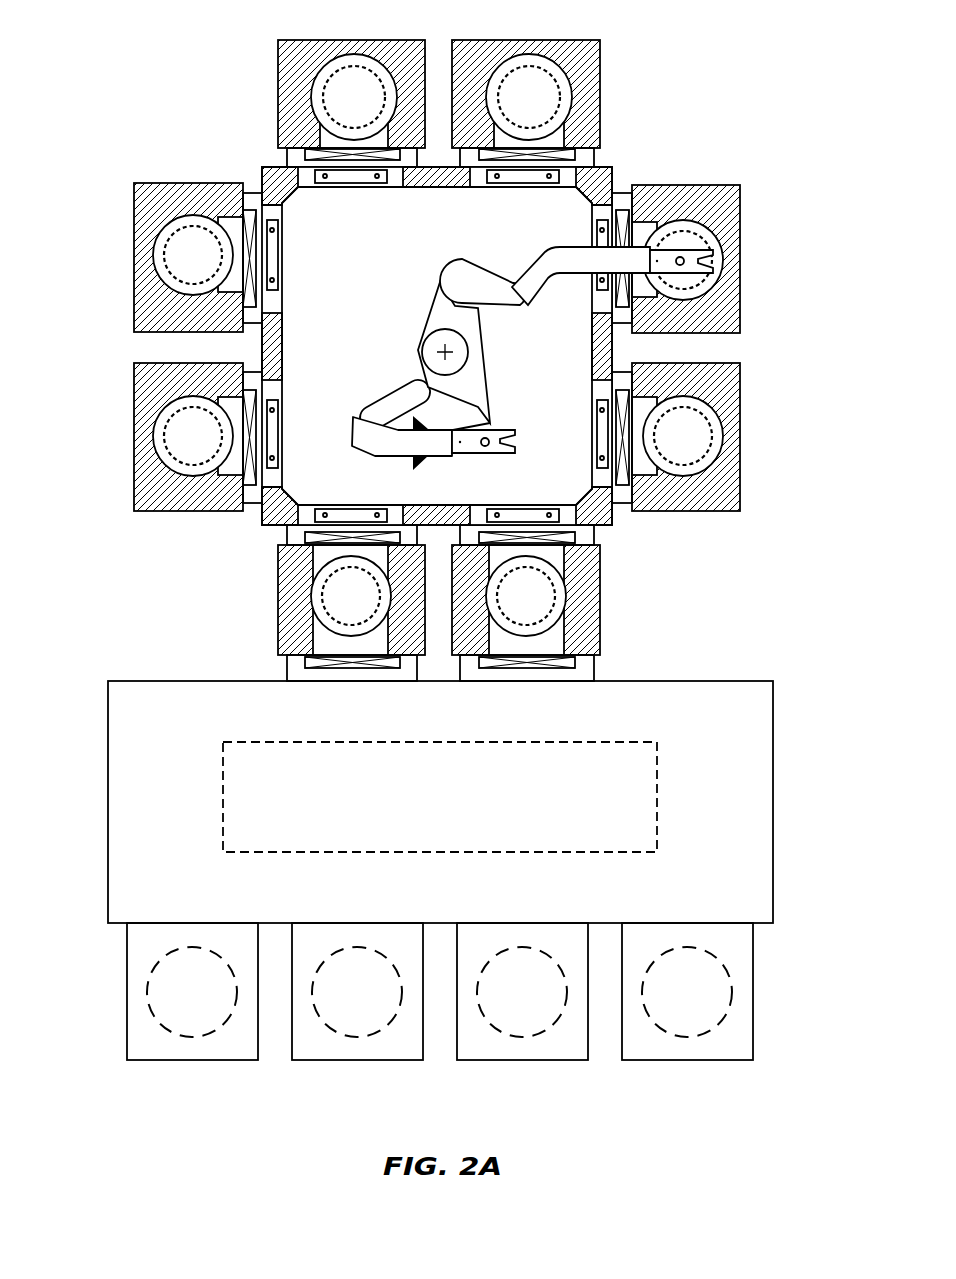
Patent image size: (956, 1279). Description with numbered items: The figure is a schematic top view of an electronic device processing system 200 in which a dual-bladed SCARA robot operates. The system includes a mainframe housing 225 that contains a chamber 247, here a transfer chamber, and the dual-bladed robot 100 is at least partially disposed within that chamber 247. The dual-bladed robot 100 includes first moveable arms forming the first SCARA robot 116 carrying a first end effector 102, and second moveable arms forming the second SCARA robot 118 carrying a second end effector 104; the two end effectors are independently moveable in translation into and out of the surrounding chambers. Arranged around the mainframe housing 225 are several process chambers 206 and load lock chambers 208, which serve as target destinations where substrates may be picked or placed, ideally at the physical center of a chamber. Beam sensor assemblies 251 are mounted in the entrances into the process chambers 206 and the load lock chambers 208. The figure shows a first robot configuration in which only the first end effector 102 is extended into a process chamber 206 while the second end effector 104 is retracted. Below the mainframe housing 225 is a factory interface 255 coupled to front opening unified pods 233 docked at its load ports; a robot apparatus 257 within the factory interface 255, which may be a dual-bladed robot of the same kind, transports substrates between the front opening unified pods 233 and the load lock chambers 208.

The electronic device processing system 200 is at (141, 95).
The process chambers 206 is at (302, 92).
The load lock chambers 208 is at (300, 602).
The mainframe housing 225 is at (483, 323).
The chamber 247 is at (455, 224).
The beam sensor assemblies 251 is at (360, 184).
The dual-bladed robot 100 is at (550, 346).
The second SCARA robot 118 is at (441, 267).
The first SCARA robot 116 is at (376, 392).
The first end effector 102 is at (688, 248).
The second end effector 104 is at (478, 455).
The factory interface 255 is at (475, 802).
The robot apparatus 257 is at (658, 780).
The front opening unified pods (FOUPs) 233 is at (195, 1062).